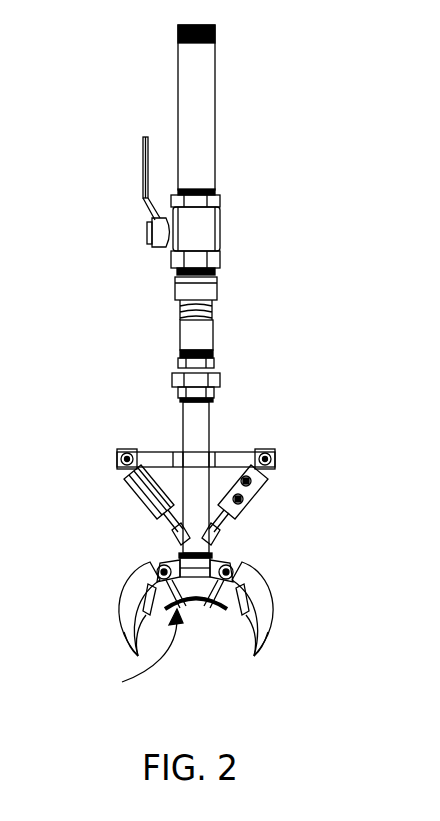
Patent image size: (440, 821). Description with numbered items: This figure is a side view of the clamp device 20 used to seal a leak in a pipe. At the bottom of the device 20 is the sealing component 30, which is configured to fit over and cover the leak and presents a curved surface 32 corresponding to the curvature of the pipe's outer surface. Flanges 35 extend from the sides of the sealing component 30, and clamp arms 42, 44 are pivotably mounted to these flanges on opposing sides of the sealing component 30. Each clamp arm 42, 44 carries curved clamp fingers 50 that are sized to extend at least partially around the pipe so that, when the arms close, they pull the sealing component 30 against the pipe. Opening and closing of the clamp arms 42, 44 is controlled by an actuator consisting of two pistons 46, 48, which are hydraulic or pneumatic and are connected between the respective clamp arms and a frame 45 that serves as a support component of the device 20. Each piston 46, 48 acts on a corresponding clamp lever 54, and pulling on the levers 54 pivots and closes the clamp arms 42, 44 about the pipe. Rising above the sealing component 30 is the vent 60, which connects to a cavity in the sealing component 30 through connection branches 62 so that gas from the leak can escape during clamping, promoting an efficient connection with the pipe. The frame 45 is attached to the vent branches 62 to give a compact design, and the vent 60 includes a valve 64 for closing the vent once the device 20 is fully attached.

The device 20 is at (325, 301).
The sealing component 30 is at (127, 659).
The curved surface 32 is at (205, 625).
The flanges 35 is at (170, 563).
The clamp arm 42 is at (268, 598).
The clamp arm 44 is at (112, 622).
The frame 45 is at (240, 455).
The piston 46 is at (258, 500).
The piston 48 is at (135, 496).
The clamp fingers 50 is at (120, 640).
The clamp lever 54 is at (175, 558).
The vent 60 is at (262, 206).
The connection branches 62 is at (203, 430).
The valve 64 is at (150, 233).